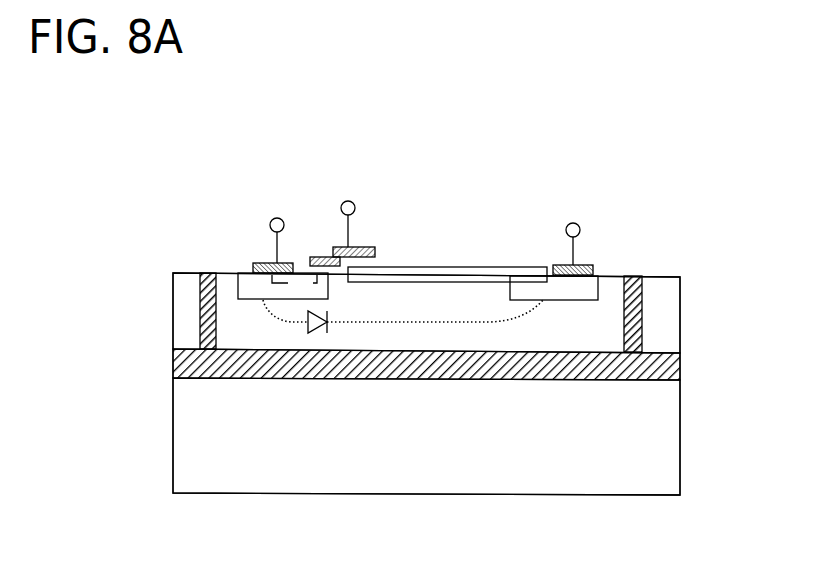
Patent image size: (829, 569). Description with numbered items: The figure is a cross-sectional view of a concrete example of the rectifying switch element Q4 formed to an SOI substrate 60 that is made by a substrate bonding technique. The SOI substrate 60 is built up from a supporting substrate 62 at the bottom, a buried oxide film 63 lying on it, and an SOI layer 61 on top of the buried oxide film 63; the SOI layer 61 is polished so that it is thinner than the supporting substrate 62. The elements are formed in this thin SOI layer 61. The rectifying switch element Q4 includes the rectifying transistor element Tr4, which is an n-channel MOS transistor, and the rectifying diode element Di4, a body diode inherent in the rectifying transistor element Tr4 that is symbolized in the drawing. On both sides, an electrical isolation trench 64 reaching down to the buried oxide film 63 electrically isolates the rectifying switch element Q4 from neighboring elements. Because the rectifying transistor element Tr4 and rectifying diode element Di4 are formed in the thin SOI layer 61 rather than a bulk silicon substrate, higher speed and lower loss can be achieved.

The SOI substrate 60 is at (752, 275).
The SOI layer 61 is at (673, 316).
The supporting substrate 62 is at (673, 443).
The buried oxide film 63 is at (673, 368).
The electrical isolation trench 64 is at (205, 273).
The rectifying switch element Q4 is at (252, 134).
The rectifying transistor element Tr4 is at (441, 203).
The rectifying diode element Di4 is at (323, 342).